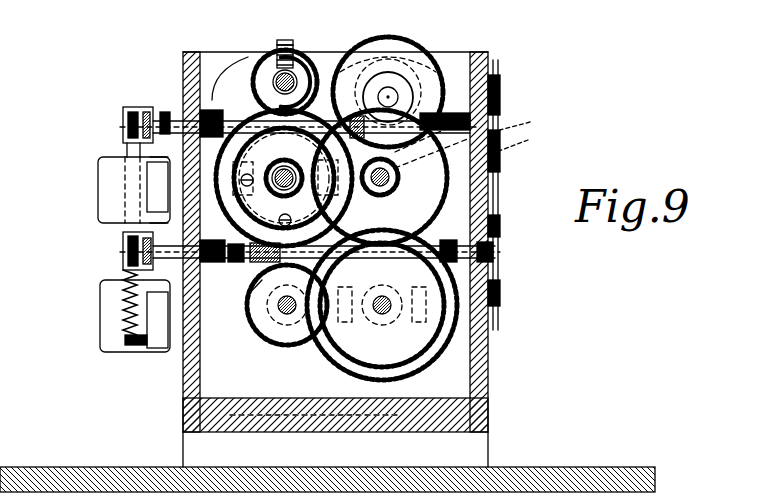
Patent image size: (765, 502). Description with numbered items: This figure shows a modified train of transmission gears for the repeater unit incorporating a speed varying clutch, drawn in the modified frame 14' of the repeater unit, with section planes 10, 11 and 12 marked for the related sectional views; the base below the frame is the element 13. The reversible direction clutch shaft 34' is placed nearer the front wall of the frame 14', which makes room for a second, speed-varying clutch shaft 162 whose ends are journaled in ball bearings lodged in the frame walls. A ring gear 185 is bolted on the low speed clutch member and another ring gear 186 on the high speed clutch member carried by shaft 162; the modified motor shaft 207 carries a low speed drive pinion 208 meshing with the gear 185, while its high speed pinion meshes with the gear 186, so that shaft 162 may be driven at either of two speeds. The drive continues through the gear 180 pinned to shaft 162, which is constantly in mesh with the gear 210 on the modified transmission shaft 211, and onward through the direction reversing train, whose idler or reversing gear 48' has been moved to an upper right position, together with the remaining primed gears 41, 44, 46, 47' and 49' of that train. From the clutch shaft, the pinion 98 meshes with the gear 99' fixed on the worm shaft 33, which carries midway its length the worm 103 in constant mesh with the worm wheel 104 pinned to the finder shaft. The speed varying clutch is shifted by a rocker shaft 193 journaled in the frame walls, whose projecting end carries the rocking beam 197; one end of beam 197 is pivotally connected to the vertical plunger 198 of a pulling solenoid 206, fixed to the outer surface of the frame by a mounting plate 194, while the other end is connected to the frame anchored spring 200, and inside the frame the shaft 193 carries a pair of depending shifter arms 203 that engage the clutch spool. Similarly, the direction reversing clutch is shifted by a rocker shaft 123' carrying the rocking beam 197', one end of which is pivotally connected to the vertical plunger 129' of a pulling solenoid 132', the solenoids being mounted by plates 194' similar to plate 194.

The section plane 10— 10 is at (250, 40).
The section plane 11— 11 is at (420, 137).
The section plane 12— 12 is at (127, 232).
The base 13 is at (526, 478).
The modified frame 14' is at (336, 253).
The worm shaft 33 is at (280, 88).
The reversible direction clutch shaft 34' is at (292, 186).
The bearing 41 is at (528, 141).
The bearing 44 is at (531, 120).
The gear 46 is at (247, 296).
The gear 47' is at (223, 318).
The idler or reversing gear 48' is at (401, 89).
The hub 49' is at (393, 94).
The pinion 98 is at (284, 178).
The gear 99' is at (379, 92).
The worm 103 is at (295, 60).
The worm wheel 104 is at (277, 52).
The rocker shaft 123' is at (339, 195).
The vertical plunger 129' is at (114, 122).
The pulling solenoid 132' is at (108, 149).
The speed-varying clutch shaft 162 is at (376, 312).
The gear 180 is at (495, 331).
The ring gear 185 is at (460, 344).
The ring gear 186 is at (498, 344).
The rocker shaft 193 is at (500, 242).
The mounting plate 194 is at (146, 342).
The mounting plates 194' is at (110, 190).
The rocking beam 197 is at (288, 251).
The rocking beam 197' is at (286, 105).
The vertical plunger 198 is at (125, 258).
The frame anchored spring 200 is at (128, 302).
The shifter arms 203 is at (444, 250).
The pulling solenoid 206 is at (110, 344).
The modified motor shaft 207 is at (285, 316).
The low speed drive pinion 208 is at (229, 343).
The gear 210 is at (500, 172).
The modified transmission shaft 211 is at (388, 186).